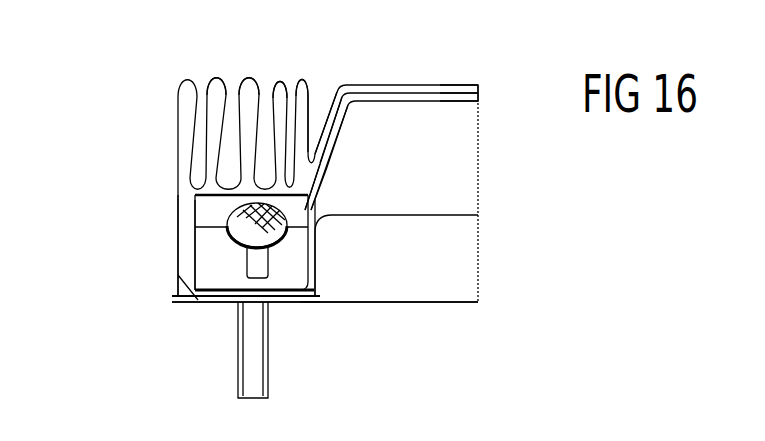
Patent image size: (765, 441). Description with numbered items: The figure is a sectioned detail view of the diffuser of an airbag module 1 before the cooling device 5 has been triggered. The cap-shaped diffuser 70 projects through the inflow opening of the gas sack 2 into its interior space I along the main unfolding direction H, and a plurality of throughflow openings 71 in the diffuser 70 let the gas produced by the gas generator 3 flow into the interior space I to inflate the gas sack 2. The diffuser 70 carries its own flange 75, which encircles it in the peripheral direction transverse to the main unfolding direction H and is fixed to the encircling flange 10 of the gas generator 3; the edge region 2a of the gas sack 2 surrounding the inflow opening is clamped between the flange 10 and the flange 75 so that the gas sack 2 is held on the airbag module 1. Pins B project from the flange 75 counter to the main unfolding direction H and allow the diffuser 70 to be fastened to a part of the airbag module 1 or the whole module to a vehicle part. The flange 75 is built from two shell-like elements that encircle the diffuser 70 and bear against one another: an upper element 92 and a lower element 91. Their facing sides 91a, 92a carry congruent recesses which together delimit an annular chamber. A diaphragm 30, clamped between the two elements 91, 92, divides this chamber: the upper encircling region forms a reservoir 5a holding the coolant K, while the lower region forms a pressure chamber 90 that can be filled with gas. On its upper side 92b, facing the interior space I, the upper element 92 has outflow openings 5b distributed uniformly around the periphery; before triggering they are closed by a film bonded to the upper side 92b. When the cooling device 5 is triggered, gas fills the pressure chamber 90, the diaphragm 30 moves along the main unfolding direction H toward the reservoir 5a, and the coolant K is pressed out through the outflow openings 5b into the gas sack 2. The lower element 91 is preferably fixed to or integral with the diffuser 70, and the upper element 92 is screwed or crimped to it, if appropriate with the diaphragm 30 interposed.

The airbag module 1 is at (146, 49).
The gas sack 2 is at (352, 85).
The edge region 2a is at (222, 307).
The gas generator 3 is at (400, 302).
The cooling device 5 is at (168, 156).
The reservoir 5a is at (227, 222).
The outflow openings 5b is at (240, 150).
The flange 10 is at (177, 305).
The diaphragm 30 is at (272, 246).
The diffuser 70 is at (463, 103).
The throughflow openings 71 is at (331, 153).
The flange 75 is at (204, 271).
The pressure chamber 90 is at (196, 236).
The lower element 91 is at (293, 264).
The side 91a is at (236, 236).
The upper element 92 is at (296, 206).
The side 92a is at (232, 226).
The upper side 92b is at (267, 120).
The pins B is at (247, 378).
The main unfolding direction H is at (501, 188).
The interior space I is at (417, 129).
The coolant K is at (317, 234).